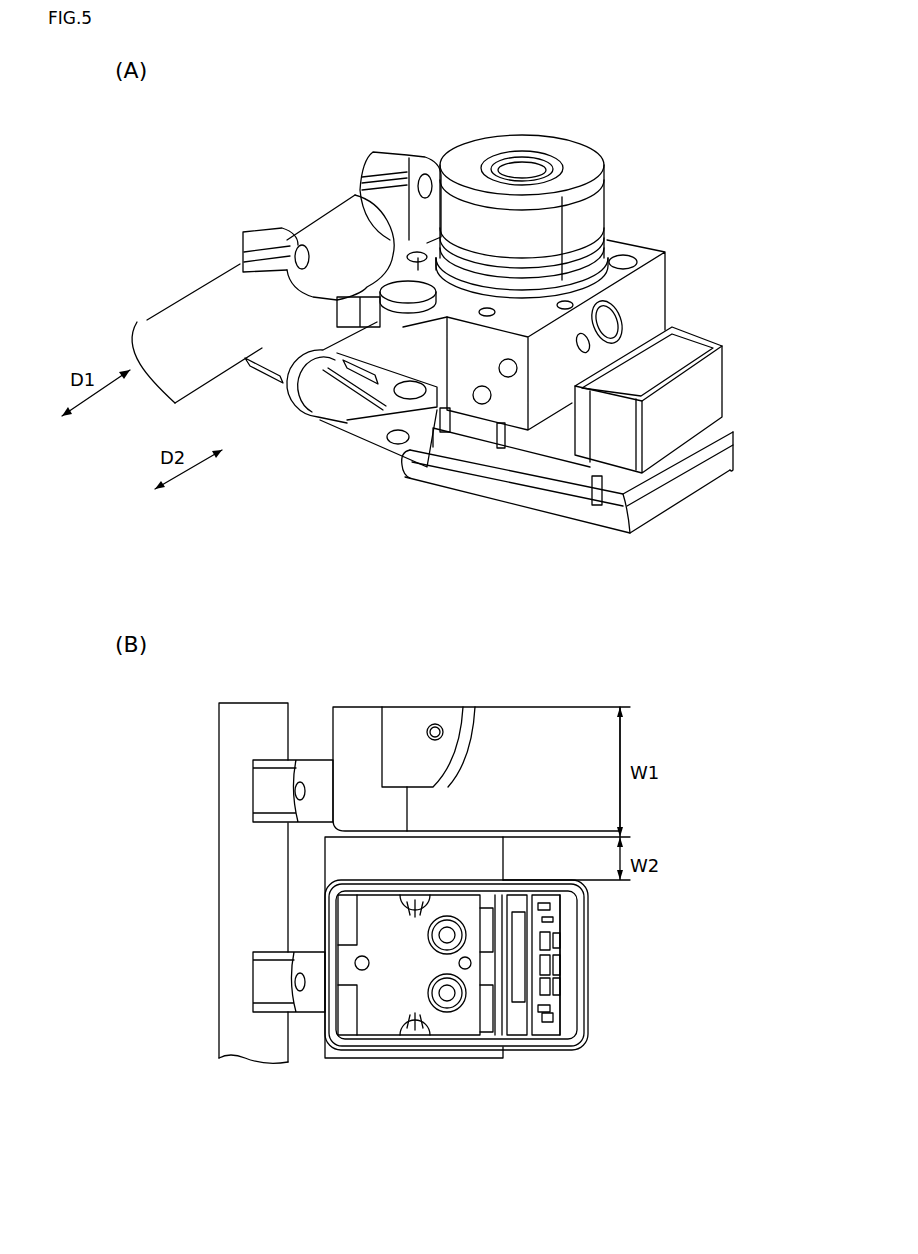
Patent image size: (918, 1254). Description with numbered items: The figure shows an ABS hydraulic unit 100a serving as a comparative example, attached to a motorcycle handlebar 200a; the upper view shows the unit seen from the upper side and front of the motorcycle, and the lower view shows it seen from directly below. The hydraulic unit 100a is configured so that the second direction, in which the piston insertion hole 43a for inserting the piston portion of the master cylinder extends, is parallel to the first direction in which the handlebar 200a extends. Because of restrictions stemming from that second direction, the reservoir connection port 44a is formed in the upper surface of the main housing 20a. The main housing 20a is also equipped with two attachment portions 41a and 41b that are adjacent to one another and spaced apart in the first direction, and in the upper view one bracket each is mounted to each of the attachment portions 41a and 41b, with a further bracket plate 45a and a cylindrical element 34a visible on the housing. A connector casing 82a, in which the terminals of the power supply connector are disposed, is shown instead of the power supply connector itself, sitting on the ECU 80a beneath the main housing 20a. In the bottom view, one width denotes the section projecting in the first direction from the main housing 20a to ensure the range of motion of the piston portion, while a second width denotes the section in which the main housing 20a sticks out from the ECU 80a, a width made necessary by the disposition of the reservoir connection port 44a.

The hydraulic unit 100a is at (655, 148).
The handlebar 200a is at (337, 208).
The main housing 20a is at (640, 253).
The motor / pump drive unit 34a is at (573, 163).
The attachment portion 41a is at (267, 233).
The attachment portion 41b is at (393, 157).
The piston insertion hole 43a is at (312, 396).
The reservoir connection port 44a is at (452, 275).
The bracket plate 45a is at (368, 427).
The ECU 80a is at (733, 470).
The connector casing 82a is at (695, 332).